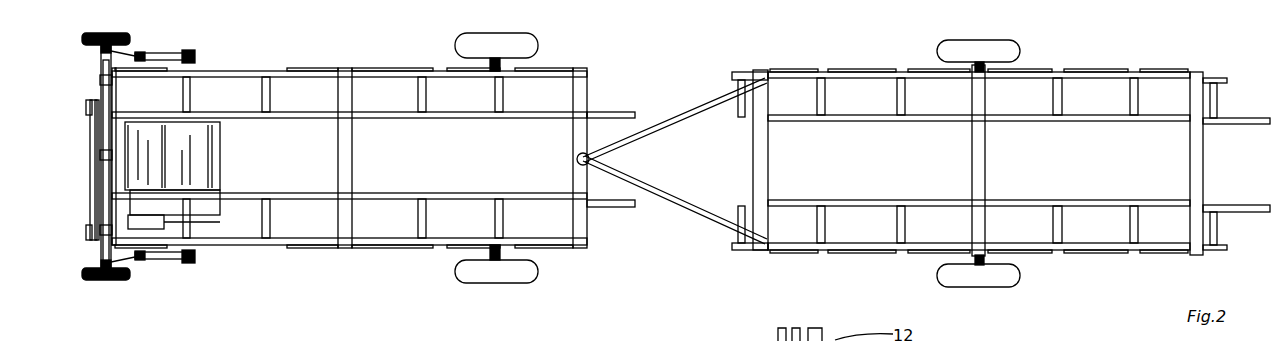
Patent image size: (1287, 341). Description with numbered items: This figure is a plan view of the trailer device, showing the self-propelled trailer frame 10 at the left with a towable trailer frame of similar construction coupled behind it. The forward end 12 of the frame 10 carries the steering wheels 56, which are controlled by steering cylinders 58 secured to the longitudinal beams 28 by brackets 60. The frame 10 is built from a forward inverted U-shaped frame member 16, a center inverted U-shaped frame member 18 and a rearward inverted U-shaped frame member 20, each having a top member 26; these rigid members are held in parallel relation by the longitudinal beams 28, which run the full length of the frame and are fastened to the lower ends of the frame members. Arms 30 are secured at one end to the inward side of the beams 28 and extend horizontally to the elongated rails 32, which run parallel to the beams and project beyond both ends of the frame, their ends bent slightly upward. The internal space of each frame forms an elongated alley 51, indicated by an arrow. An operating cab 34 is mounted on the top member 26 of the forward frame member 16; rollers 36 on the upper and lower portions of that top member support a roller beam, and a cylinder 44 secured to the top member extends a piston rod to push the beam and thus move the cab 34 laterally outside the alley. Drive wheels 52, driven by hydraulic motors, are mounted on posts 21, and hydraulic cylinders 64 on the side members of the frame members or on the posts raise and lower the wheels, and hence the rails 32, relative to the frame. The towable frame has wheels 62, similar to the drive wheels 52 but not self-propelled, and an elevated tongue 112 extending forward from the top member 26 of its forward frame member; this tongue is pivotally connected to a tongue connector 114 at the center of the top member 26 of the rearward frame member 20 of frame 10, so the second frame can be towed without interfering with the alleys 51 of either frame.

The self-propelled trailer frame 10 is at (396, 60).
The forward end 12 is at (88, 136).
The forward inverted U-shaped frame member 16 is at (100, 72).
The center inverted U-shaped frame member 18 is at (344, 75).
The rearward inverted U-shaped frame member 20 is at (570, 168).
The post 21 is at (495, 80).
The top member 26 is at (384, 60).
The longitudinal beams 28 is at (438, 66).
The arms 30 is at (420, 122).
The elongated rails 32 is at (612, 112).
The operating cab 34 is at (222, 157).
The rollers 36 is at (96, 90).
The cylinder 44 is at (95, 172).
The alley 51 is at (80, 152).
The drive wheels 52 is at (482, 42).
The steering wheels 56 is at (84, 42).
The steering cylinders 58 is at (168, 50).
The brackets 60 is at (195, 56).
The wheels 62 is at (988, 44).
The hydraulic cylinders 64 is at (496, 64).
The elevated tongue 112 is at (580, 153).
The tongue connector 114 is at (578, 158).